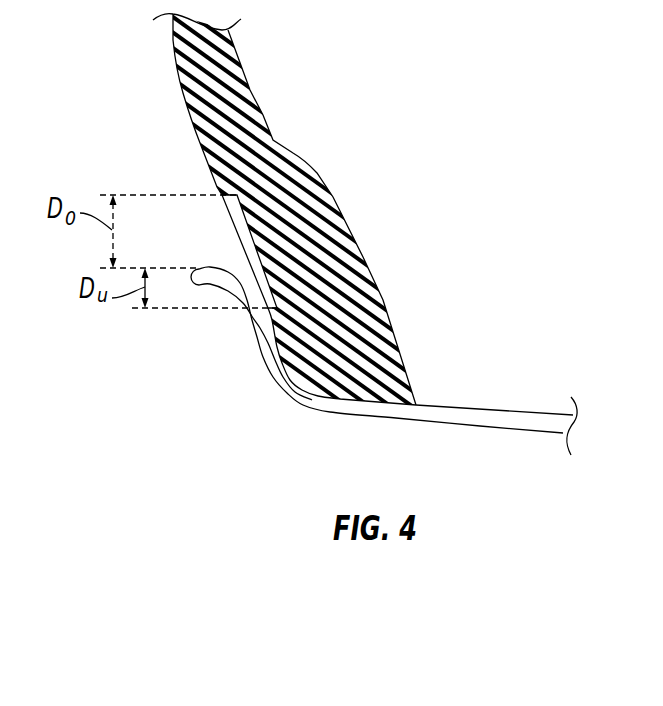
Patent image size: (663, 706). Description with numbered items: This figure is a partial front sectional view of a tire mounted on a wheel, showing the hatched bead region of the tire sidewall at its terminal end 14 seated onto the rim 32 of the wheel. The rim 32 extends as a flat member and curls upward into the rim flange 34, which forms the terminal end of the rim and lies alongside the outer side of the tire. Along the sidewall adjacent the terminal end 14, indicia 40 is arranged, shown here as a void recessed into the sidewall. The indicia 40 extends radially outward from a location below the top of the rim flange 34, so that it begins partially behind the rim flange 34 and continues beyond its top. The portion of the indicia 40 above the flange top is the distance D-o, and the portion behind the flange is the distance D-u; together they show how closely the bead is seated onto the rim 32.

The terminal end 14 is at (375, 352).
The indicia 40 is at (250, 238).
The rim flange 34 is at (256, 338).
The rim 32 is at (488, 431).